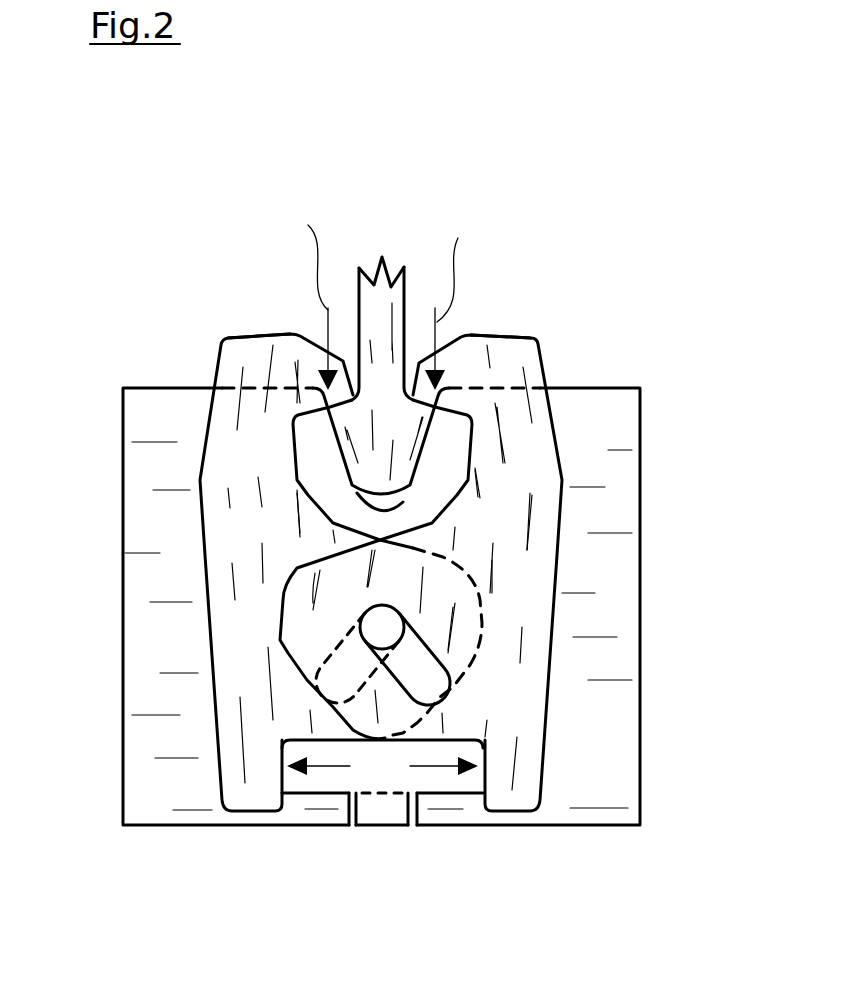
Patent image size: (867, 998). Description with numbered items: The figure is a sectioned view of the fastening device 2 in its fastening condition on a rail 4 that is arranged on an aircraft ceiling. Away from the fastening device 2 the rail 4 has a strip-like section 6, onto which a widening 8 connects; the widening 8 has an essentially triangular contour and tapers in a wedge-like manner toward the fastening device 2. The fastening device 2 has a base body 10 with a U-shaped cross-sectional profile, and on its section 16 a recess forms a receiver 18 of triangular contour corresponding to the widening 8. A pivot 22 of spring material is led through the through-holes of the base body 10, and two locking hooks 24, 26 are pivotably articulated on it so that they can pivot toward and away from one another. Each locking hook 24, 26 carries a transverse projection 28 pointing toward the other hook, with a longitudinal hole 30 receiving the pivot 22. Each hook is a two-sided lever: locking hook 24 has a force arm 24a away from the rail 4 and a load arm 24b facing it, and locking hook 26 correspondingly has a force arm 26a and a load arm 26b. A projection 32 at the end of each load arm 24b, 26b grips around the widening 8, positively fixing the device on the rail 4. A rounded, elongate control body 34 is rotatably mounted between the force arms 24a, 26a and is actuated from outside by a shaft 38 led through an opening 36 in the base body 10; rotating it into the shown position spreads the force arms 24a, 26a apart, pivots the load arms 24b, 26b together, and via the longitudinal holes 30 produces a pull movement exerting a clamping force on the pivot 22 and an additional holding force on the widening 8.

The fastening device 2 is at (116, 705).
The rail 4 is at (409, 304).
The strip-like section 6 is at (372, 303).
The widening 8 is at (423, 437).
The base body 10 is at (117, 577).
The section 16 is at (620, 607).
The receiver 18 is at (403, 502).
The pivot 22 is at (404, 625).
The locking hook 24 is at (556, 364).
The force arm 24a is at (530, 787).
The load arm 24b is at (552, 423).
The locking hook 26 is at (214, 354).
The force arm 26a is at (233, 787).
The load arm 26b is at (231, 432).
The projection 28 is at (297, 568).
The longitudinal hole 30 is at (333, 652).
The projection 32 is at (440, 327).
The control body 34 is at (322, 782).
The opening 36 is at (345, 803).
The shaft 38 is at (398, 813).